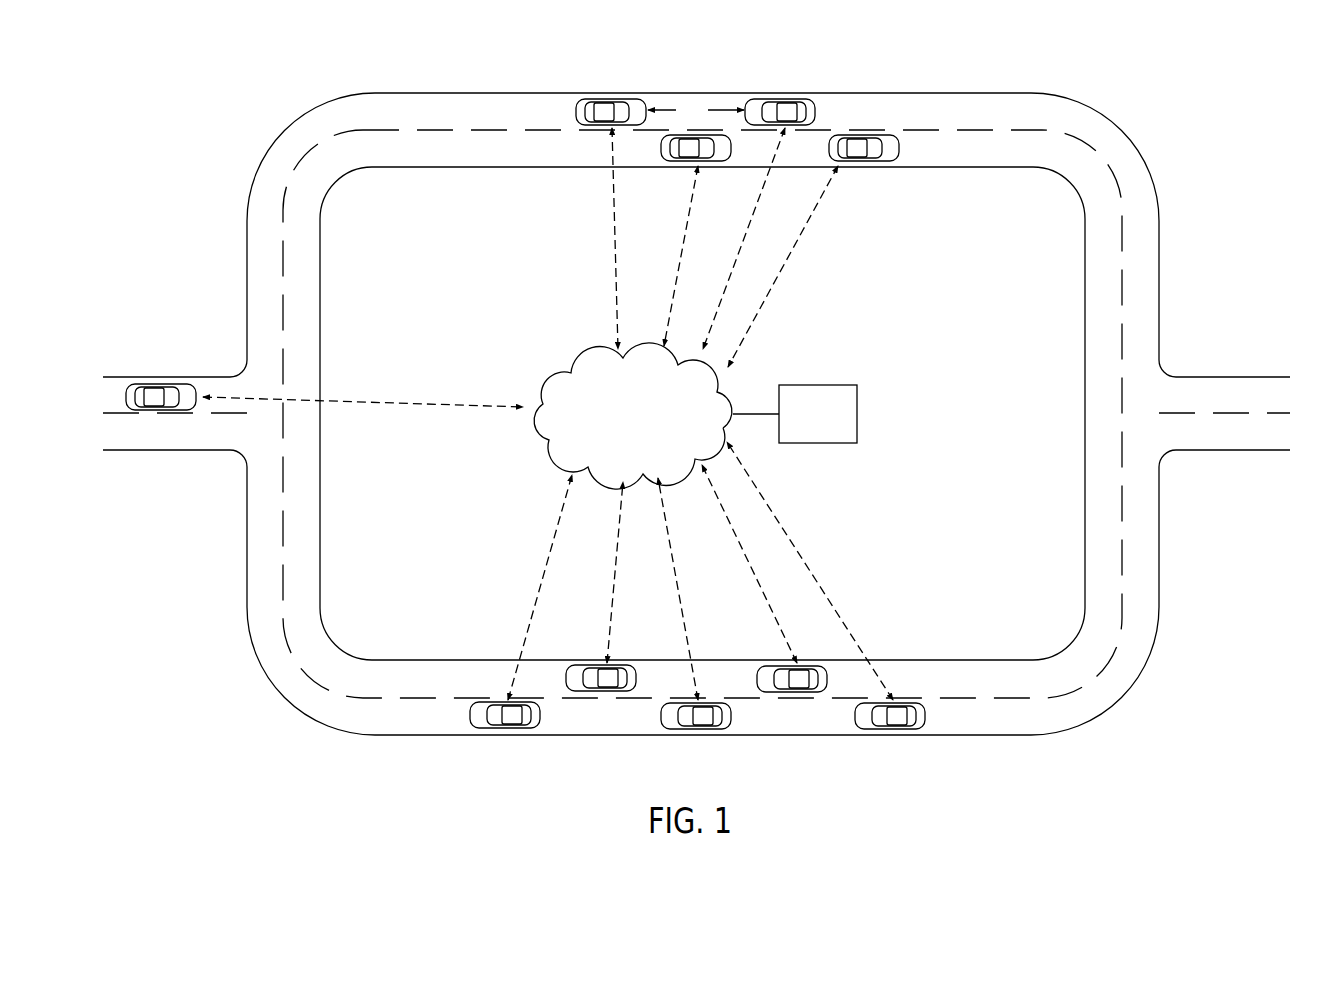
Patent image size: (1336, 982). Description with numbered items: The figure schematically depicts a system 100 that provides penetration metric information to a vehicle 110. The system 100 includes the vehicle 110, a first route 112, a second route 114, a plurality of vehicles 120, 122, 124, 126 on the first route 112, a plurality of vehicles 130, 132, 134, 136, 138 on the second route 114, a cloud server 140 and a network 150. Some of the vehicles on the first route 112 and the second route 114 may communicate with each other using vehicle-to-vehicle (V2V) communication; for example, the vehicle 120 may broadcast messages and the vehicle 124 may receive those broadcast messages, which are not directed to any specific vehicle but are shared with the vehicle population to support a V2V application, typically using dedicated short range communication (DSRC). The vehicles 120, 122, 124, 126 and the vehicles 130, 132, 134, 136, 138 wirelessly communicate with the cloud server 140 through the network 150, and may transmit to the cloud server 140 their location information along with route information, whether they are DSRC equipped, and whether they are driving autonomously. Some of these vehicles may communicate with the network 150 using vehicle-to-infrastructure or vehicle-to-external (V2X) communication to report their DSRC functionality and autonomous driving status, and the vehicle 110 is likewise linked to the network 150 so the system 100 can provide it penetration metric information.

The system 100 is at (696, 416).
The vehicle 110 is at (173, 383).
The first route 112 is at (247, 243).
The second route 114 is at (247, 503).
The vehicle 120 is at (622, 99).
The vehicle 122 is at (688, 162).
The vehicle 124 is at (790, 99).
The vehicle 126 is at (864, 162).
The vehicle 130 is at (508, 730).
The vehicle 132 is at (590, 664).
The vehicle 134 is at (718, 731).
The vehicle 136 is at (768, 665).
The vehicle 138 is at (896, 731).
The cloud server 140 is at (818, 385).
The network 150 is at (578, 362).